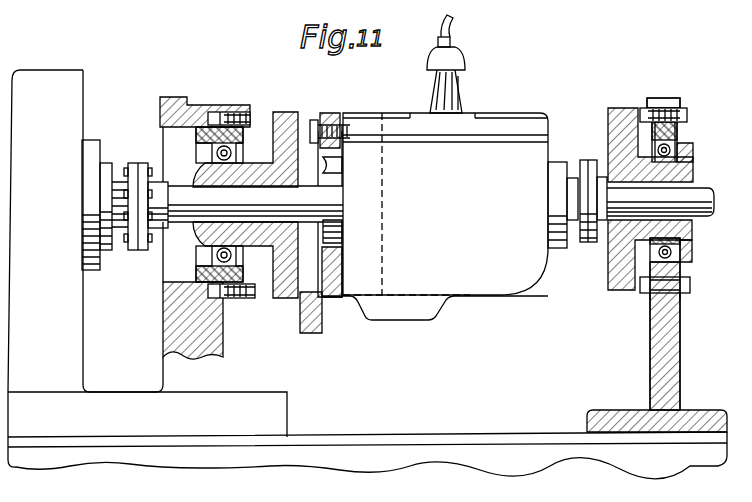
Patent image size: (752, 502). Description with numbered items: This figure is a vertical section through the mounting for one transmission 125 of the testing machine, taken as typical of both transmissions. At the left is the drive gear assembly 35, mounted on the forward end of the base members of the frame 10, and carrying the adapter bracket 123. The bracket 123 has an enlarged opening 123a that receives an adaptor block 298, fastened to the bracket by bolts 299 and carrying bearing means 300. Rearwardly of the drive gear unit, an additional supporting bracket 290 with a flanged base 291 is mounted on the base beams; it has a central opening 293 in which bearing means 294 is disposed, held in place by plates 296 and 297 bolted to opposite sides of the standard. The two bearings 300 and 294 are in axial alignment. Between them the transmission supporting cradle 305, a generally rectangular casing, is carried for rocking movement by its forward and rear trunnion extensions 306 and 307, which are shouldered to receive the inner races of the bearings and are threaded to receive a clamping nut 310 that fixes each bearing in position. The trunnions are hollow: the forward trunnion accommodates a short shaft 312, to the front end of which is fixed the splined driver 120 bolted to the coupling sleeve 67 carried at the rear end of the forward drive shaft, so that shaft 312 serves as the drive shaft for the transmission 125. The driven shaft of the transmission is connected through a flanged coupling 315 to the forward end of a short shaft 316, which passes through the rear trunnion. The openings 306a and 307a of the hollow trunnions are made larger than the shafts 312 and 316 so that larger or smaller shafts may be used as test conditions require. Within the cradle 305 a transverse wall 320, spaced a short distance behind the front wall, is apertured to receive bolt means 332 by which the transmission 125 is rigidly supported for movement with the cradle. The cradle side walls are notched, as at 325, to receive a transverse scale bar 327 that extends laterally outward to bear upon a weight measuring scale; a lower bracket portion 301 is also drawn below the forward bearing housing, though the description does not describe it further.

The frame 10 is at (418, 430).
The drive gear assembly 35 is at (92, 71).
The coupling sleeve 67 is at (128, 180).
The splined driver 120 is at (97, 200).
The adapter bracket 123 is at (163, 96).
The enlarged opening 123a is at (162, 132).
The transmission 125 is at (481, 281).
The supporting bracket 290 is at (660, 97).
The flanged base 291 is at (607, 410).
The central opening 293 is at (676, 145).
The bearing means 294 is at (681, 147).
The plate 296 is at (680, 98).
The plate 297 is at (650, 105).
The adaptor block 298 is at (199, 109).
The bolts 299 is at (250, 112).
The bearing means 300 is at (250, 145).
The lower bracket 301 is at (291, 300).
The transmission supporting cradle 305 is at (499, 113).
The trunnion extension 306 is at (193, 233).
The opening 306a is at (281, 180).
The trunnion extension 307 is at (693, 178).
The opening 307a is at (567, 199).
The clamping nut 310 is at (694, 246).
The short shaft 312 is at (215, 208).
The flanged coupling 315 is at (585, 157).
The short shaft 316 is at (712, 197).
The transverse wall 320 is at (343, 111).
The notch 325 is at (343, 265).
The transverse scale bar 327 is at (320, 333).
The bolt means 332 is at (316, 119).